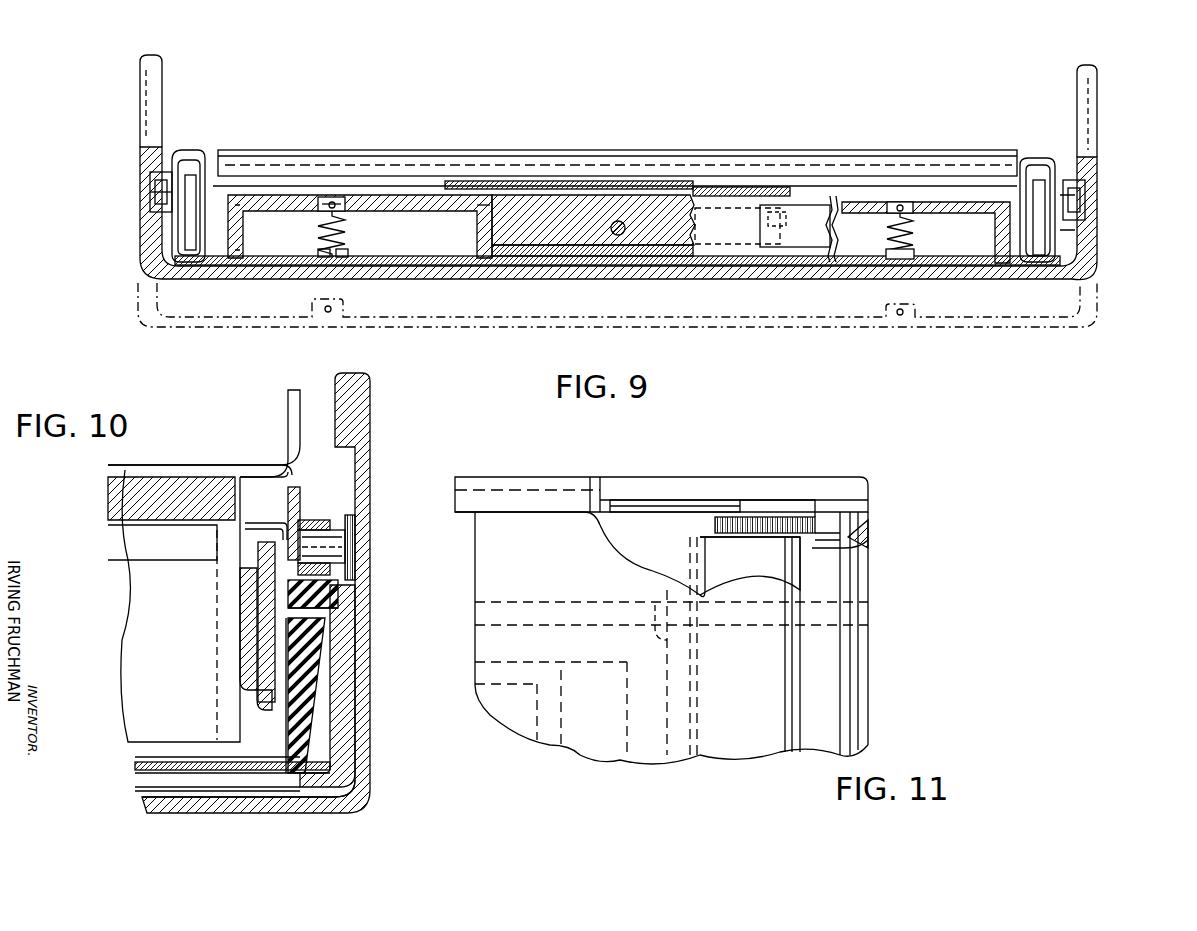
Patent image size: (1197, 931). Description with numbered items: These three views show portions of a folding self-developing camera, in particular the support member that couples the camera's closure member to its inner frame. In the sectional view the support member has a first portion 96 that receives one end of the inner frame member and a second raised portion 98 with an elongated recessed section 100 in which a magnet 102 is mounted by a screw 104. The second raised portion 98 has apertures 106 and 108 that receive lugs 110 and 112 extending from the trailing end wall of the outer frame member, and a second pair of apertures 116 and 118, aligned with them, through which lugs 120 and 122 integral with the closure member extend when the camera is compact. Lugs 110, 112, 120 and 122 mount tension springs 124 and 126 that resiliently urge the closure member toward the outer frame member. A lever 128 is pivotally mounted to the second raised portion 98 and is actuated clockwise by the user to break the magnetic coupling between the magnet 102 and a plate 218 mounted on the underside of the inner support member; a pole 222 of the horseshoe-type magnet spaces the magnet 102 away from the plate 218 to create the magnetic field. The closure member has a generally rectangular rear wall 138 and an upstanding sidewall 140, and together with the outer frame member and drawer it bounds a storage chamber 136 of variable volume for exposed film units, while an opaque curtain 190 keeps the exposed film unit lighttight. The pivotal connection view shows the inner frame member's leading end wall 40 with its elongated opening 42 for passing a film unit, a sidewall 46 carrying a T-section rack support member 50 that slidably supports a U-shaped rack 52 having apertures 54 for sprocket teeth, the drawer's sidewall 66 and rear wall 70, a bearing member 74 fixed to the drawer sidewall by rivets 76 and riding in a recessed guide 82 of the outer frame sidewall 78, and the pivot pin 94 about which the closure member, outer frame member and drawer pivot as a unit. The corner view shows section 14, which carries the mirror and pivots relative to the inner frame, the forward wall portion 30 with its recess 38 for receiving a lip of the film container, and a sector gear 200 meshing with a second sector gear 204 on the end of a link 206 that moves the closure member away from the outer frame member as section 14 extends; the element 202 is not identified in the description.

In FIG. 11, the section 14 is at (540, 757).
In FIG. 9, the wall portion 30 is at (815, 172).
In FIG. 11, the wall portion 30 is at (712, 578).
In FIG. 11, the recess 38 is at (655, 603).
In FIG. 10, the leading end wall 40 is at (174, 606).
In FIG. 10, the elongated opening 42 is at (158, 548).
In FIG. 10, the sidewall 46 is at (215, 697).
In FIG. 9, the rack support member 50 is at (1080, 196).
In FIG. 10, the rack support member 50 is at (245, 626).
In FIG. 9, the rack 52 is at (1062, 190).
In FIG. 10, the rack 52 is at (262, 565).
In FIG. 9, the apertures 54 is at (1045, 175).
In FIG. 10, the apertures 54 is at (300, 515).
In FIG. 10, the sidewall 66 is at (300, 708).
In FIG. 10, the rear wall 70 is at (355, 778).
In FIG. 10, the bearing member 74 is at (340, 597).
In FIG. 10, the rivets 76 is at (325, 645).
In FIG. 10, the sidewall 78 is at (352, 680).
In FIG. 10, the recessed guide 82 is at (350, 612).
In FIG. 10, the pivot pin 94 is at (345, 547).
In FIG. 9, the first portion 96 is at (268, 262).
In FIG. 9, the second raised portion 98 is at (418, 196).
In FIG. 9, the elongated recessed section 100 is at (455, 222).
In FIG. 9, the magnet 102 is at (580, 252).
In FIG. 9, the screw 104 is at (617, 240).
In FIG. 9, the aperture 106 is at (918, 205).
In FIG. 9, the aperture 108 is at (325, 200).
In FIG. 9, the lug 110 is at (898, 205).
In FIG. 9, the lug 112 is at (340, 203).
In FIG. 9, the aperture 116 is at (886, 263).
In FIG. 9, the aperture 118 is at (350, 262).
In FIG. 9, the lug 120 is at (922, 262).
In FIG. 9, the lug 122 is at (345, 262).
In FIG. 9, the tension spring 124 is at (918, 236).
In FIG. 9, the tension spring 126 is at (315, 226).
In FIG. 9, the lever 128 is at (735, 245).
In FIG. 9, the storage chamber 136 is at (795, 318).
In FIG. 9, the rear wall 138 is at (680, 285).
In FIG. 10, the rear wall 138 is at (228, 812).
In FIG. 11, the sidewall 140 is at (575, 480).
In FIG. 10, the curtain 190 is at (322, 794).
In FIG. 9, the sector gear 200 is at (1095, 205).
In FIG. 11, the sector gear 200 is at (800, 516).
In FIG. 9, the pin 202 is at (155, 192).
In FIG. 11, the second sector gear 204 is at (752, 518).
In FIG. 11, the link 206 is at (650, 505).
In FIG. 9, the plate 218 is at (545, 182).
In FIG. 9, the pole 222 is at (665, 188).